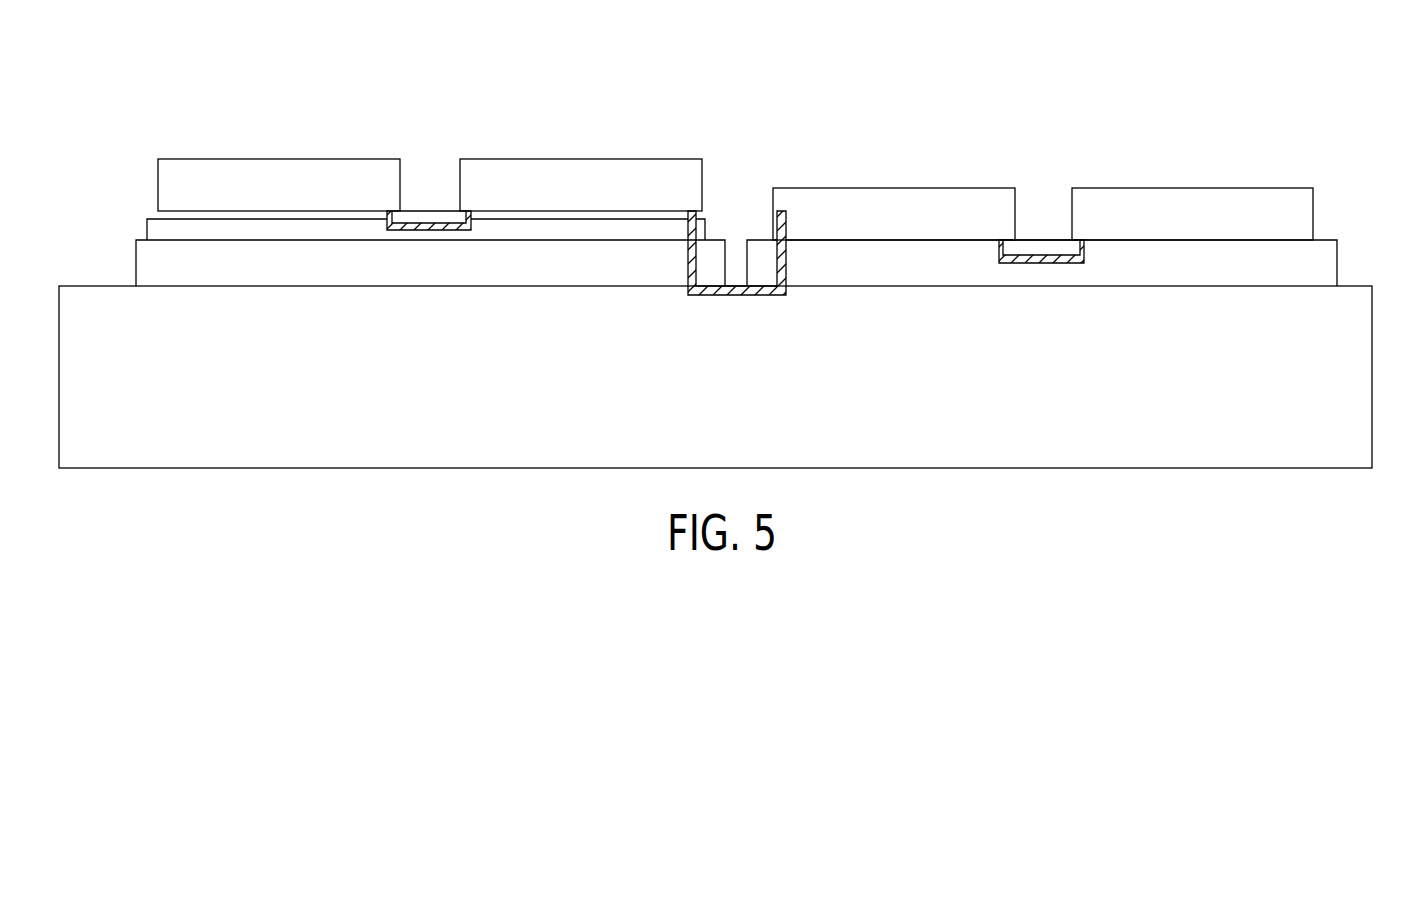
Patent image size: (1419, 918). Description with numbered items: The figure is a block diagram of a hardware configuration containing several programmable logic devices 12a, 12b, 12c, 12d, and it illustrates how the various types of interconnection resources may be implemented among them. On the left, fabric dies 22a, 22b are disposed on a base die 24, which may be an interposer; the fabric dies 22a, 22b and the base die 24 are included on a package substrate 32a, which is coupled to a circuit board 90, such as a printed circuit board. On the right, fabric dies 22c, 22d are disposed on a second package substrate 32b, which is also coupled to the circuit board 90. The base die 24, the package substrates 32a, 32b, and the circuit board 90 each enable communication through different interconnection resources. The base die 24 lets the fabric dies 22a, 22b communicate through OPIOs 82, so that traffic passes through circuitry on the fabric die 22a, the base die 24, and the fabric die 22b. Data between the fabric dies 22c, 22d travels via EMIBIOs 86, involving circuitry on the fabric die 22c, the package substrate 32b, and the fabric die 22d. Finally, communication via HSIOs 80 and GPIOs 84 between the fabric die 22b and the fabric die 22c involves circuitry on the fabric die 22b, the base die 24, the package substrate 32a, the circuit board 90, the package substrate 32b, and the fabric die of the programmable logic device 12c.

The programmable logic device 12a is at (290, 150).
The programmable logic device 12b is at (587, 152).
The programmable logic device 12c is at (885, 180).
The programmable logic device 12d is at (1183, 180).
The fabric die 22a is at (200, 173).
The fabric die 22b is at (527, 173).
The fabric die 22c is at (945, 212).
The fabric die 22d is at (1244, 210).
The base die 24 is at (158, 229).
The package substrate 32a is at (165, 258).
The second package substrate 32b is at (1323, 260).
The HSIOs 80 is at (697, 306).
The GPIOs 84 is at (737, 253).
The OPIOs 82 is at (425, 208).
The EMIBIOs 86 is at (1043, 232).
The circuit board 90 is at (135, 425).